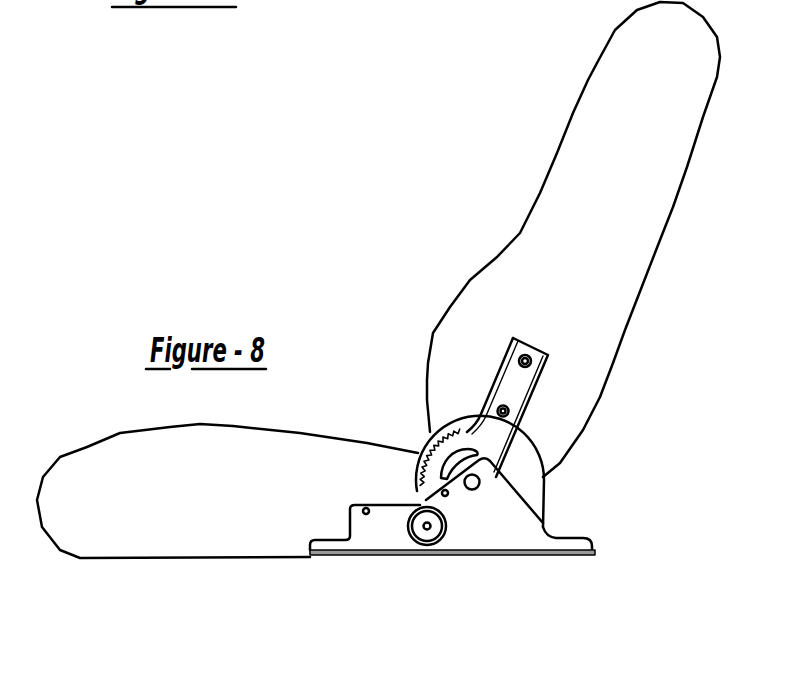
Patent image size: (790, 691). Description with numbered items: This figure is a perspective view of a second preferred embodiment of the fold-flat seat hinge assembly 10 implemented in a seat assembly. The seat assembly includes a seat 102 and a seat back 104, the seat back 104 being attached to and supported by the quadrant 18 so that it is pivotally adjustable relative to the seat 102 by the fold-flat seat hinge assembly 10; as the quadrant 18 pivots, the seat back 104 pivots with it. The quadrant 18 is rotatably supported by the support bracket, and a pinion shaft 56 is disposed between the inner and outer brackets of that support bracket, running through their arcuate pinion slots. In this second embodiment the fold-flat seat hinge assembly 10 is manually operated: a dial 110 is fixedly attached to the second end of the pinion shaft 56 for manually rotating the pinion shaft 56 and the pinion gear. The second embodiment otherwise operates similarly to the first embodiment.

The fold-flat seat hinge assembly 10 is at (383, 414).
The seat back 104 is at (620, 127).
The seat 102 is at (83, 463).
The quadrant 18 is at (513, 387).
The pinion shaft 56 is at (430, 526).
The dial 110 is at (398, 534).